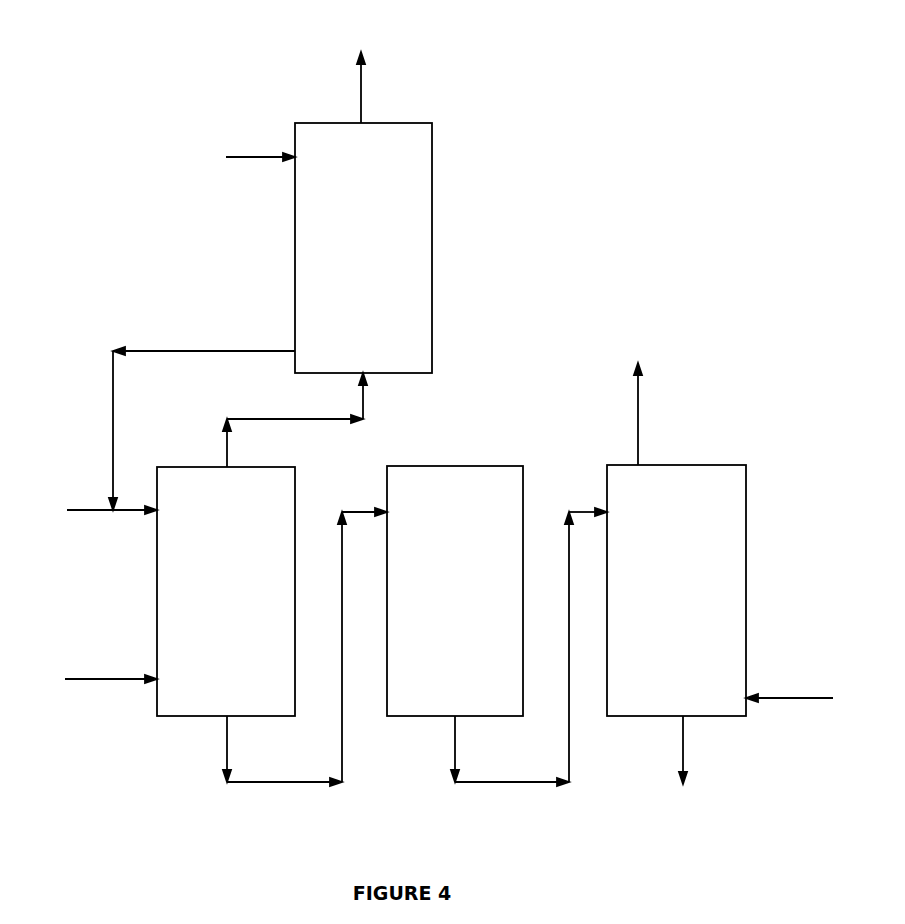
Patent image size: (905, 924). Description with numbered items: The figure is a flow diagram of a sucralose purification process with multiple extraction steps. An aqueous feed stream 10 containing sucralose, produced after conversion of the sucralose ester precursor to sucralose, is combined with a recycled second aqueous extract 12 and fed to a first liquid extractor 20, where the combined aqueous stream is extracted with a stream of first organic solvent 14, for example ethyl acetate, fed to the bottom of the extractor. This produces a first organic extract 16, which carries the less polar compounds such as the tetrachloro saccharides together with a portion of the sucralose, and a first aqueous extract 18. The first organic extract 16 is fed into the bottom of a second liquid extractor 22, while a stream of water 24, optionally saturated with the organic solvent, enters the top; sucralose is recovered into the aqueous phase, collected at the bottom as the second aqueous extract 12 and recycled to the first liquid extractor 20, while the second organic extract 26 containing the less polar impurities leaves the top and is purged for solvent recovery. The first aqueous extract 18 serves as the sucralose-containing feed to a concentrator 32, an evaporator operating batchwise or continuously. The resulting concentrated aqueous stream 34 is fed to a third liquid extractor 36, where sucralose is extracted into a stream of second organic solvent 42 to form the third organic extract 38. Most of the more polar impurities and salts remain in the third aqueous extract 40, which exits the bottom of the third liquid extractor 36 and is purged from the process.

The aqueous feed stream 10 is at (90, 506).
The second aqueous extract 12 is at (202, 416).
The first organic solvent 14 is at (90, 680).
The first organic extract 16 is at (295, 420).
The first aqueous extract 18 is at (305, 647).
The first liquid extractor 20 is at (190, 593).
The second liquid extractor 22 is at (323, 244).
The stream of water 24 is at (238, 158).
The second organic extract 26 is at (367, 74).
The concentrator 32 is at (489, 498).
The concentrated aqueous stream 34 is at (529, 647).
The third liquid extractor 36 is at (728, 500).
The third organic extract 38 is at (630, 402).
The third aqueous extract 40 is at (682, 765).
The second organic solvent 42 is at (806, 700).